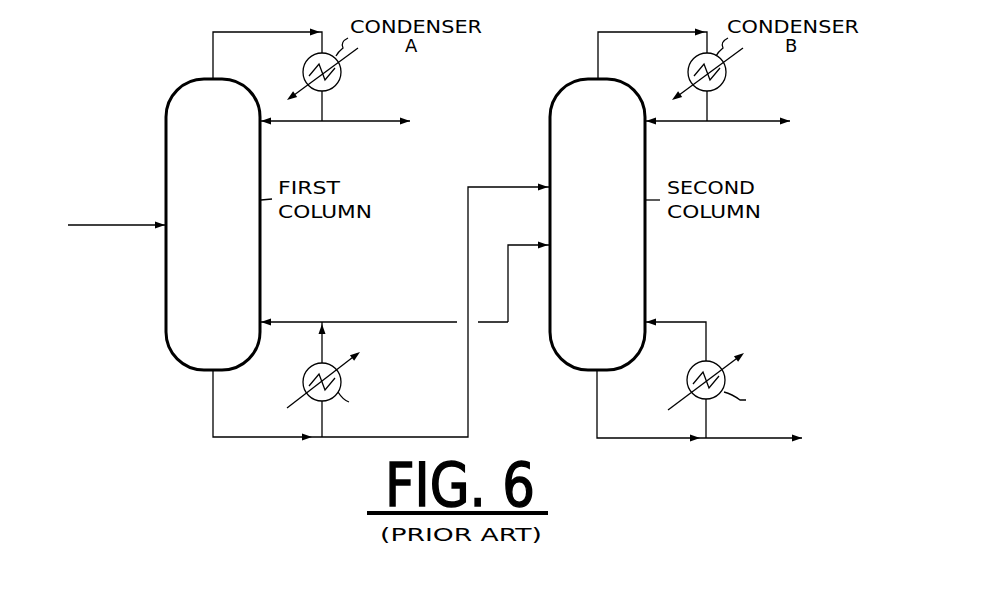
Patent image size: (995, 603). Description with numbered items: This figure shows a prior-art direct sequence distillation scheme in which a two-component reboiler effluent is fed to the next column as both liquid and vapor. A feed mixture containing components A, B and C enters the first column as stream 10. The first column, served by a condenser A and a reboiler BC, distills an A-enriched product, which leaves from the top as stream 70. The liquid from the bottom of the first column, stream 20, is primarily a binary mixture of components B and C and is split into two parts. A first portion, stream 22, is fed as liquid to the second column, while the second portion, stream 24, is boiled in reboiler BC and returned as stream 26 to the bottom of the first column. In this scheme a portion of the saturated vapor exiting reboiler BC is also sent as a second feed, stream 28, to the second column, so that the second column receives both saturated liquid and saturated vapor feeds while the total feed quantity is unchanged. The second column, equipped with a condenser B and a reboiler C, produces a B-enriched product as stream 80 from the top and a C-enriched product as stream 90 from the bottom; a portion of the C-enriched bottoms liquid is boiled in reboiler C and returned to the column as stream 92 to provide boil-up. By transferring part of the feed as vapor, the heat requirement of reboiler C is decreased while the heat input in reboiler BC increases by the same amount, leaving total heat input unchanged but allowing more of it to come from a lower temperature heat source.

The feed mixture stream 10 is at (109, 228).
The bottom liquid stream 20 is at (212, 406).
The first portion stream 22 is at (470, 426).
The second portion stream 24 is at (318, 419).
The boiled return stream 26 is at (302, 318).
The second feed stream 28 is at (510, 306).
The A-enriched product stream 70 is at (356, 123).
The B-enriched product stream 80 is at (738, 123).
The C-enriched product stream 90 is at (760, 441).
The boiled bottoms return stream 92 is at (692, 322).